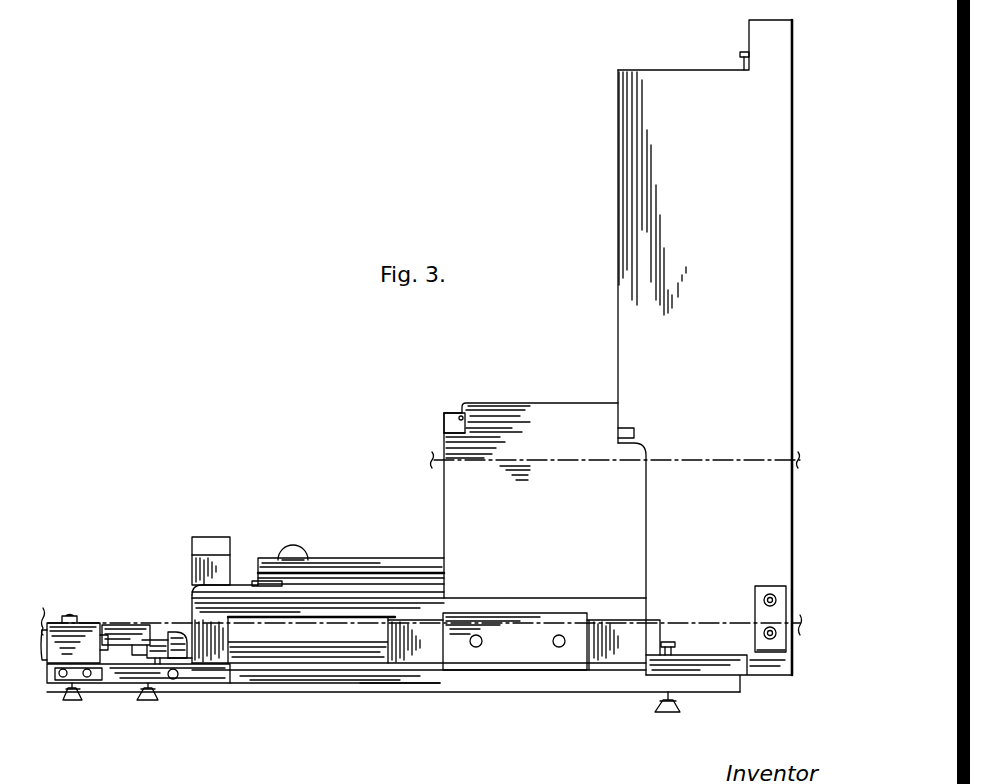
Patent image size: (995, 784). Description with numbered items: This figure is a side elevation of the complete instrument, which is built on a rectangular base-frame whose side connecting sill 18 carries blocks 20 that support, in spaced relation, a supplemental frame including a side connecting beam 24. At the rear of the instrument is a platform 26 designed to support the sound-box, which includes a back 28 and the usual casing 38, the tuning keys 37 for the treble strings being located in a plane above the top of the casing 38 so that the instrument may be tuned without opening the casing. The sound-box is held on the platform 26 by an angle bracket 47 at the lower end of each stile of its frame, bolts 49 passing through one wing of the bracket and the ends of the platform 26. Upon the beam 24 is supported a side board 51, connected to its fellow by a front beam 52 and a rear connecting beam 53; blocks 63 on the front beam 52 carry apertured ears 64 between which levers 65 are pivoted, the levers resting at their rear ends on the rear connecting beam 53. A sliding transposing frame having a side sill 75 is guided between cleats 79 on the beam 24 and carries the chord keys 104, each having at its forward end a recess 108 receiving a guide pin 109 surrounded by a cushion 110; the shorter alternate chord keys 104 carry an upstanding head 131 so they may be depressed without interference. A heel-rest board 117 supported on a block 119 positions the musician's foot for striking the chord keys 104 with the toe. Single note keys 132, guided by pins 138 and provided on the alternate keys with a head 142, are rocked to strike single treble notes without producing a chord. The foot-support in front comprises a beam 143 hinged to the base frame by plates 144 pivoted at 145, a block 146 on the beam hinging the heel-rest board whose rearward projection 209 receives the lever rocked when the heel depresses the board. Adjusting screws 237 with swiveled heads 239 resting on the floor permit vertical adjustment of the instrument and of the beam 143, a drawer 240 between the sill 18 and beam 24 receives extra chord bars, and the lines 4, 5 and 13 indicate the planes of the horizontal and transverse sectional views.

The section line 4— 4 is at (614, 462).
The section line 5— 5 is at (422, 621).
The section line 13— 13 is at (668, 641).
The side connecting sill 18 is at (372, 666).
The blocks 20 is at (222, 666).
The side connecting beam 24 is at (320, 619).
The platform 26 is at (735, 664).
The back 28 is at (792, 239).
The tuning keys 37 is at (741, 53).
The casing 38 is at (665, 193).
The angle bracket 47 is at (776, 613).
The bolts 49 is at (768, 651).
The side board 51 is at (419, 544).
The front beam 52 is at (445, 428).
The rear connecting beam 53 is at (618, 434).
The blocks 63 is at (450, 414).
The apertured ears 64 is at (466, 420).
The levers 65 is at (557, 410).
The side sill 75 is at (370, 585).
The cleats 79 is at (335, 573).
The chord keys 104 is at (264, 560).
The recess 108 is at (300, 558).
The pin 109 is at (290, 548).
The cushion 110 is at (292, 580).
The heel-rest board 117 is at (208, 546).
The block 119 is at (199, 584).
The upstanding head 131 is at (296, 565).
The single note keys 132 is at (296, 652).
The guide-pins 138 is at (156, 686).
The head 142 is at (180, 632).
The beam 143 is at (46, 684).
The plates 144 is at (118, 680).
The pivotal connection 145 is at (180, 682).
The block 146 is at (72, 640).
The rearwardly extending projection 209 is at (118, 632).
The adjusting screws 237 is at (82, 691).
The swiveled head 239 is at (68, 698).
The drawer 240 is at (515, 641).